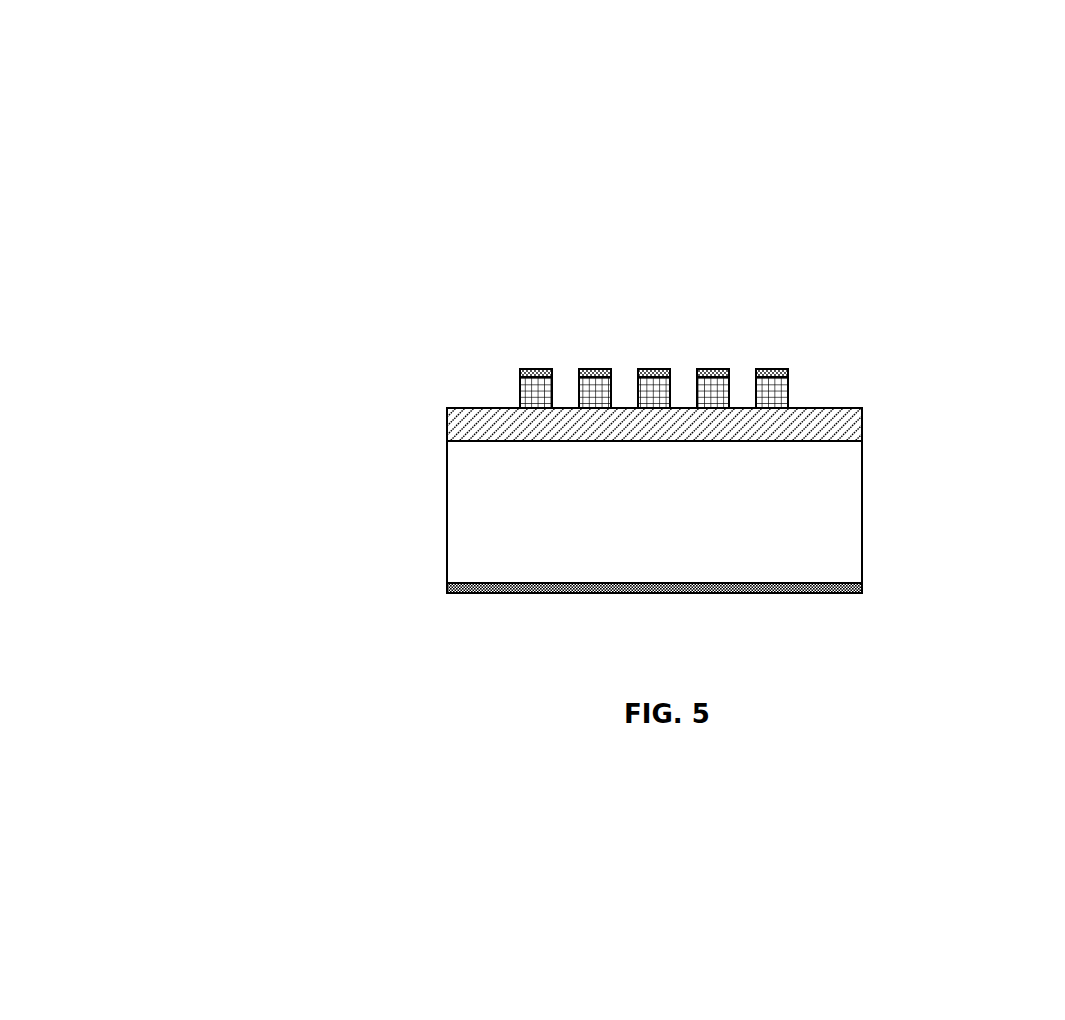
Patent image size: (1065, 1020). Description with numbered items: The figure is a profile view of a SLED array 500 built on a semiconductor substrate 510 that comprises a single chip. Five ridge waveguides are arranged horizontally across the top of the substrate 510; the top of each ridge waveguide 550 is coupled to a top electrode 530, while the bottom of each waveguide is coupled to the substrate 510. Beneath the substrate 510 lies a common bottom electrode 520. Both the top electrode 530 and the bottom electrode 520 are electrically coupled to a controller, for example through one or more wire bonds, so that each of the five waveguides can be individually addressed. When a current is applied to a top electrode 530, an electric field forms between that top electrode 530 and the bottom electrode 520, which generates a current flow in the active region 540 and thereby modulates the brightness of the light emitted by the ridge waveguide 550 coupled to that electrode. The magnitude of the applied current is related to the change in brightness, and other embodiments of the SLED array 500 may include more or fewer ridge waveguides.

The SLED array 500 is at (86, 49).
The substrate 510 is at (862, 508).
The bottom electrode 520 is at (848, 593).
The top electrode 530 is at (652, 370).
The active region 540 is at (862, 427).
The ridge waveguide 550 is at (640, 380).